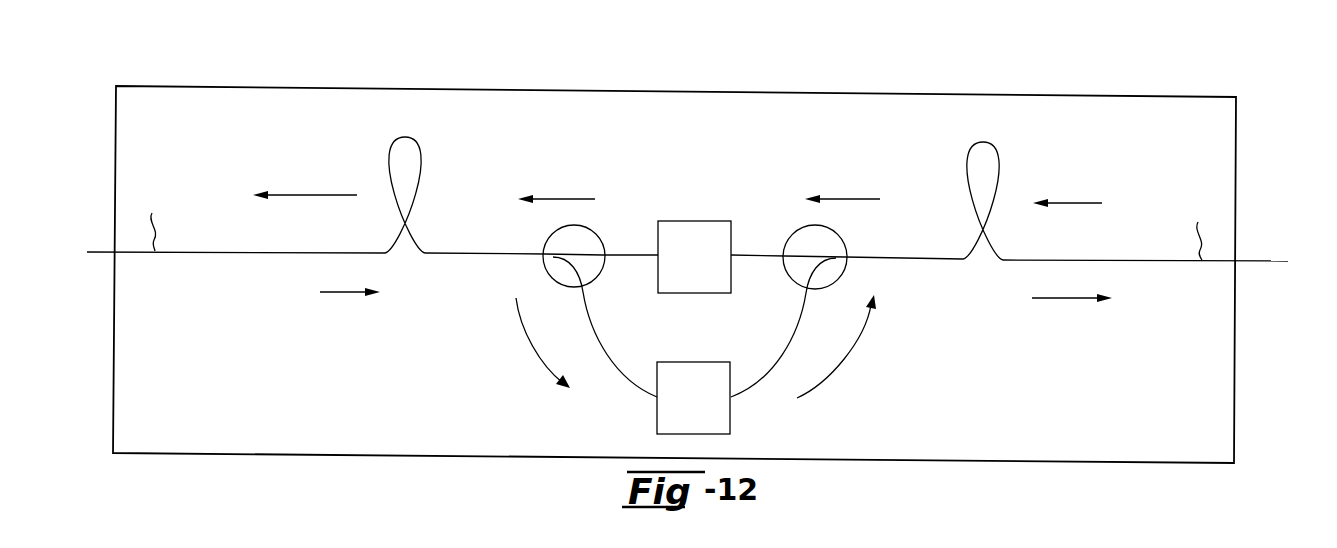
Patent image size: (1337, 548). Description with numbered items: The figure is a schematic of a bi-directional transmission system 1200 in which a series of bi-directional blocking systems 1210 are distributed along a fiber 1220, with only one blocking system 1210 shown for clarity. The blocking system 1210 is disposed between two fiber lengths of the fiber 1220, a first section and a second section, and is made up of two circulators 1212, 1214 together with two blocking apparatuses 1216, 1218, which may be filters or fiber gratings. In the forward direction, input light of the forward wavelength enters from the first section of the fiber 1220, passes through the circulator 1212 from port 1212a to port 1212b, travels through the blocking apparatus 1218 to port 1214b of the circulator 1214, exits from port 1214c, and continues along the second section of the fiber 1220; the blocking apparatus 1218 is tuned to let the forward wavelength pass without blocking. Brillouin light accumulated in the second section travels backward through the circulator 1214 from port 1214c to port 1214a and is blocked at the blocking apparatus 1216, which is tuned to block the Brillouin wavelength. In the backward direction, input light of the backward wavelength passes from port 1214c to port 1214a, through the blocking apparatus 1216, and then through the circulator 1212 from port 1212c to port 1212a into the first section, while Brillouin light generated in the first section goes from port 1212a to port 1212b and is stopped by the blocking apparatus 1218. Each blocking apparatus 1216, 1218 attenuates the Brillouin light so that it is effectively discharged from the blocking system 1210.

The bi-directional transmission system 1200 is at (606, 70).
The blocking system 1210 is at (312, 86).
The circulator 1212 is at (543, 262).
The port 1212a is at (540, 255).
The port 1212b is at (582, 290).
The port 1212c is at (612, 255).
The circulator 1214 is at (845, 246).
The port 1214a is at (777, 255).
The port 1214b is at (807, 288).
The port 1214c is at (848, 258).
The blocking apparatus 1216 is at (695, 220).
The blocking apparatus 1218 is at (731, 423).
The fiber 1220 is at (1270, 260).